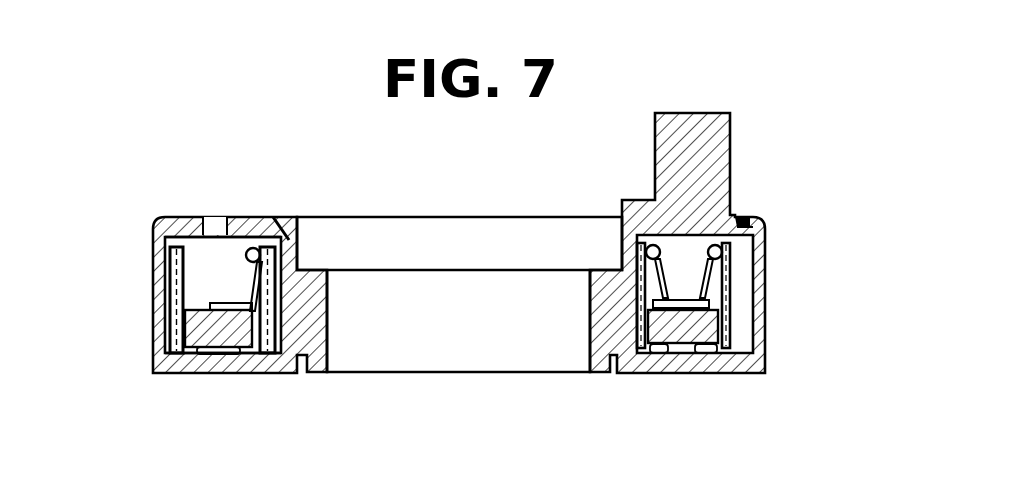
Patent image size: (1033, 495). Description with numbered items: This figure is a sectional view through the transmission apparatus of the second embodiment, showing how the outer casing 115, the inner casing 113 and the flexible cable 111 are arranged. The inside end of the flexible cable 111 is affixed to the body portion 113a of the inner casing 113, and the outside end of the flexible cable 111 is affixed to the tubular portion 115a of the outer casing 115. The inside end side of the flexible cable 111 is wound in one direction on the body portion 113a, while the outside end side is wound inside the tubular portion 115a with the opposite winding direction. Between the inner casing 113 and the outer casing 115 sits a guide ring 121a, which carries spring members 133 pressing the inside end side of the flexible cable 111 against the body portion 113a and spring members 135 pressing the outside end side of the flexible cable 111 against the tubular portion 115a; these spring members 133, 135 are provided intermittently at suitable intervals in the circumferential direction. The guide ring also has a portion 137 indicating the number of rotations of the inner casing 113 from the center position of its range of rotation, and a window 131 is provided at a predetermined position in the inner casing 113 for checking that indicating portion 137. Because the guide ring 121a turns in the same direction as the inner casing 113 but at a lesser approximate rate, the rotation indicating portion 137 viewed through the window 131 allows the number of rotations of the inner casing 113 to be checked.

The flexible cable 111 is at (613, 270).
The inner casing 113 is at (238, 216).
The body portion 113a is at (326, 318).
The outer casing 115 is at (225, 363).
The tubular portion 115a is at (157, 333).
The guide ring 121a is at (703, 327).
The window 131 is at (218, 215).
The spring members 133 is at (250, 250).
The spring members 135 is at (730, 222).
The rotation indicating portion 137 is at (190, 308).